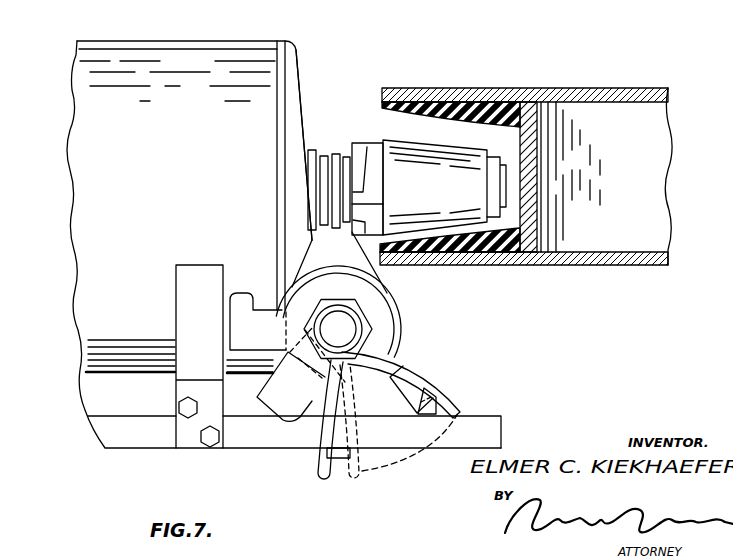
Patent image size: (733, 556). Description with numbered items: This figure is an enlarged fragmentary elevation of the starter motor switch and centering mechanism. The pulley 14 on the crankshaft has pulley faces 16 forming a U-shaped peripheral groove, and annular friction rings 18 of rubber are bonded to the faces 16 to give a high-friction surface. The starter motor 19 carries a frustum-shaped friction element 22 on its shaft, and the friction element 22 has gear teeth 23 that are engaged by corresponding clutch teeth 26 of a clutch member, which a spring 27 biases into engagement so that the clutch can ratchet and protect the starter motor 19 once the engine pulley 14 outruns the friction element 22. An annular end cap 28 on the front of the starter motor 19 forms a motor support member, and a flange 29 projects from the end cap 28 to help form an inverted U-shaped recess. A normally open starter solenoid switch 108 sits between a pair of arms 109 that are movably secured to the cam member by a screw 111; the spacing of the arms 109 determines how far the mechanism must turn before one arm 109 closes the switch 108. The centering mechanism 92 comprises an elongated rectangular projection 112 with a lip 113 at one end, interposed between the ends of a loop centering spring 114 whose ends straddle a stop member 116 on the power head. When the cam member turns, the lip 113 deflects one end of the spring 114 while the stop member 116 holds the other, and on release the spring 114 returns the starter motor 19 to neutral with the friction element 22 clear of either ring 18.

The pulley 14 is at (577, 90).
The pulley faces 16 is at (392, 108).
The annular friction rings 18 is at (473, 120).
The starter motor 19 is at (177, 49).
The friction element 22 is at (430, 153).
The gear teeth 23 is at (368, 190).
The clutch teeth 26 is at (363, 204).
The spring 27 is at (333, 157).
The annular end cap 28 is at (292, 85).
The flange 29 is at (358, 262).
The centering mechanism 92 is at (435, 353).
The starter solenoid switch 108 is at (182, 322).
The arms 109 is at (266, 312).
The screw 111 is at (373, 328).
The elongated rectangular projection 112 is at (405, 387).
The lip 113 is at (434, 400).
The loop centering spring 114 is at (412, 375).
The stop member 116 is at (337, 453).